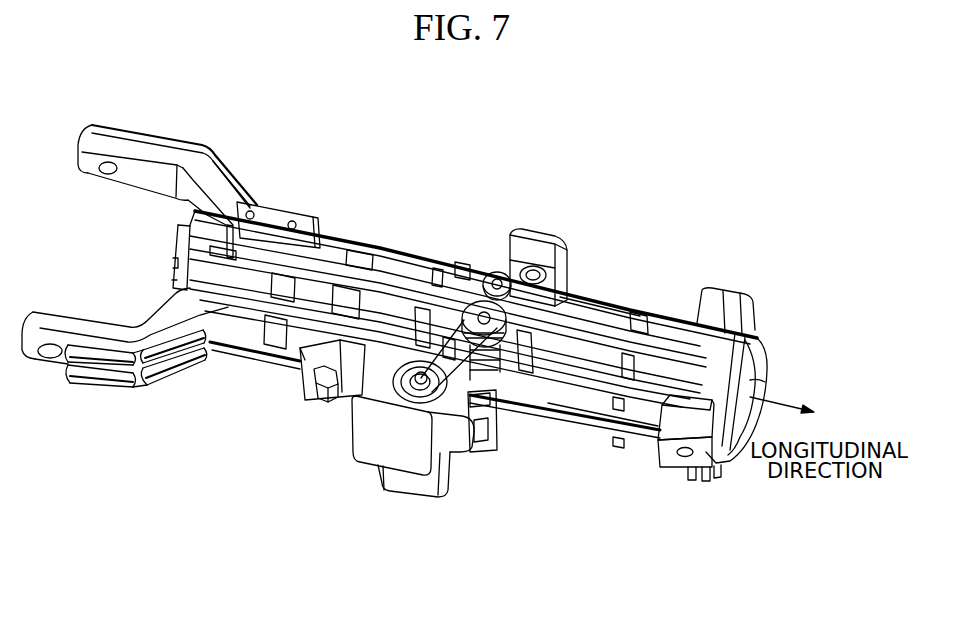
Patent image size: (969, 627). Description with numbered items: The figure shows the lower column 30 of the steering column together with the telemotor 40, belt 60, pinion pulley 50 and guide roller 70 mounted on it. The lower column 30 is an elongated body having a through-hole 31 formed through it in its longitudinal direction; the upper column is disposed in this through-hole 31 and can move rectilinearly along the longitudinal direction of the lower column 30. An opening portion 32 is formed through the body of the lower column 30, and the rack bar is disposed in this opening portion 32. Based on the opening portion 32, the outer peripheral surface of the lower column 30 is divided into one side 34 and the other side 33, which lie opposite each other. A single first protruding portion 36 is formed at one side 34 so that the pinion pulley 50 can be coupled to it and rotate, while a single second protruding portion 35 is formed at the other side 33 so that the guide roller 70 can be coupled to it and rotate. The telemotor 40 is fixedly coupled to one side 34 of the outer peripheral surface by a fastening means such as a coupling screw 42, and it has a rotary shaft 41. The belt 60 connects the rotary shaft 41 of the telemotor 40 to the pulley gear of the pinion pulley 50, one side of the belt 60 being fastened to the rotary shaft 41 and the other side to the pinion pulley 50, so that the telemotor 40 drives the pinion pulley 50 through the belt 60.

The lower column 30 is at (638, 293).
The through-hole 31 is at (768, 381).
The opening portion 32 is at (700, 356).
The other side of the outer peripheral surface 33 is at (583, 302).
The one side of the outer peripheral surface 34 is at (587, 364).
The second protruding portion 35 is at (494, 277).
The first protruding portion 36 is at (478, 305).
The telemotor 40 is at (391, 509).
The rotary shaft 41 is at (407, 400).
The coupling screw 42 is at (312, 405).
The pinion pulley 50 is at (521, 345).
The belt 60 is at (479, 440).
The guide roller 70 is at (482, 280).